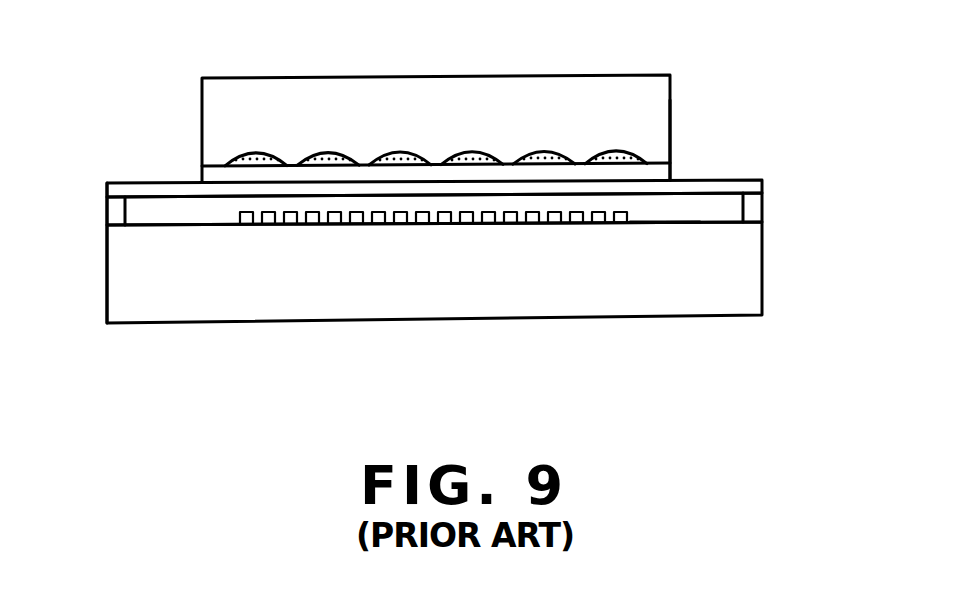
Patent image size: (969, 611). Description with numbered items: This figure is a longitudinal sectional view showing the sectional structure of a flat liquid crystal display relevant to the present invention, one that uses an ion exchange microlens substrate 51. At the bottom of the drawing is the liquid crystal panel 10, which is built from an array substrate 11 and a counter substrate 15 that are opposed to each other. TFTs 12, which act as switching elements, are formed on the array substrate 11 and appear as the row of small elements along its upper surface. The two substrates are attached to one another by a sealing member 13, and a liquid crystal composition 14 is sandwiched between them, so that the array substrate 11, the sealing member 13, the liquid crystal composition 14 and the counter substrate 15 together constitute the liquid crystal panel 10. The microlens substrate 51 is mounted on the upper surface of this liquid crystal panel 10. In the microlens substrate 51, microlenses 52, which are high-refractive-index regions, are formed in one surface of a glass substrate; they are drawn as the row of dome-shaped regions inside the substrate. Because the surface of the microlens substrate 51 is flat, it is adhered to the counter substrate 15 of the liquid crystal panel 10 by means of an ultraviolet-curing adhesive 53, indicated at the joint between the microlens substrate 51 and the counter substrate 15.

The liquid crystal panel 10 is at (108, 178).
The array substrate 11 is at (754, 276).
The TFTs 12 is at (380, 224).
The sealing member 13 is at (754, 208).
The liquid crystal composition 14 is at (650, 213).
The counter substrate 15 is at (745, 176).
The microlens substrate 51 is at (607, 77).
The microlenses 52 is at (544, 152).
The ultraviolet-curing adhesive 53 is at (672, 163).